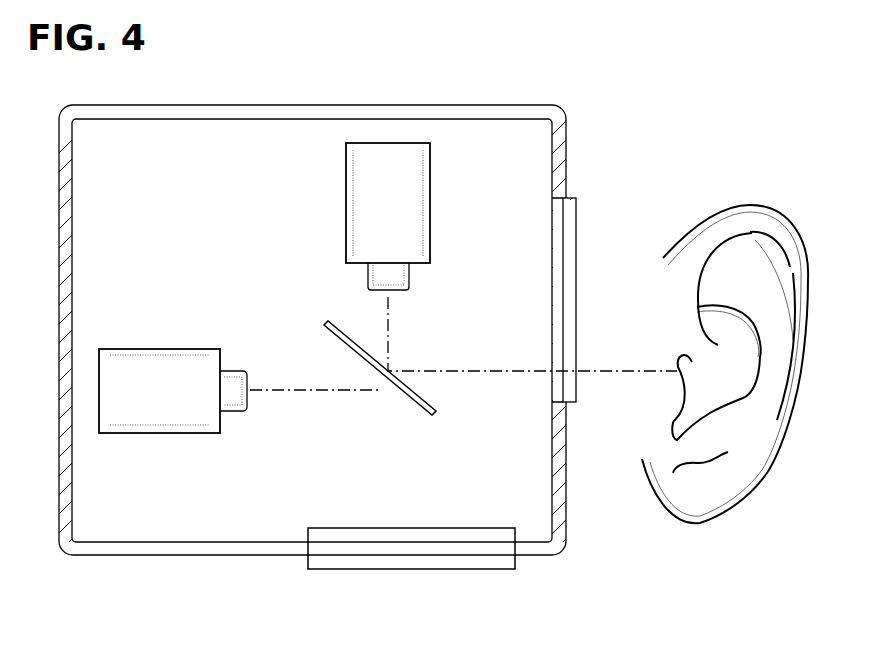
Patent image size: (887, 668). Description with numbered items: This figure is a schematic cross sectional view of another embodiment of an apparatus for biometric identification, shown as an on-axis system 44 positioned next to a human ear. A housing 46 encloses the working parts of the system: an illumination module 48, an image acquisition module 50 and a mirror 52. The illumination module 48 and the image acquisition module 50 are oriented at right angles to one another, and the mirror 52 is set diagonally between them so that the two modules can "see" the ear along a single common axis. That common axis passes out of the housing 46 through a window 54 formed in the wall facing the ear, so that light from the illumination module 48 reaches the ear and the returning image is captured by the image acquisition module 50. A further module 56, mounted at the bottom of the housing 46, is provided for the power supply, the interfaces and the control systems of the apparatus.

The on-axis system 44 is at (553, 90).
The housing 46 is at (267, 107).
The illumination module 48 is at (417, 165).
The image acquisition module 50 is at (158, 352).
The mirror 52 is at (423, 397).
The window 54 is at (577, 223).
The module 56 is at (447, 560).